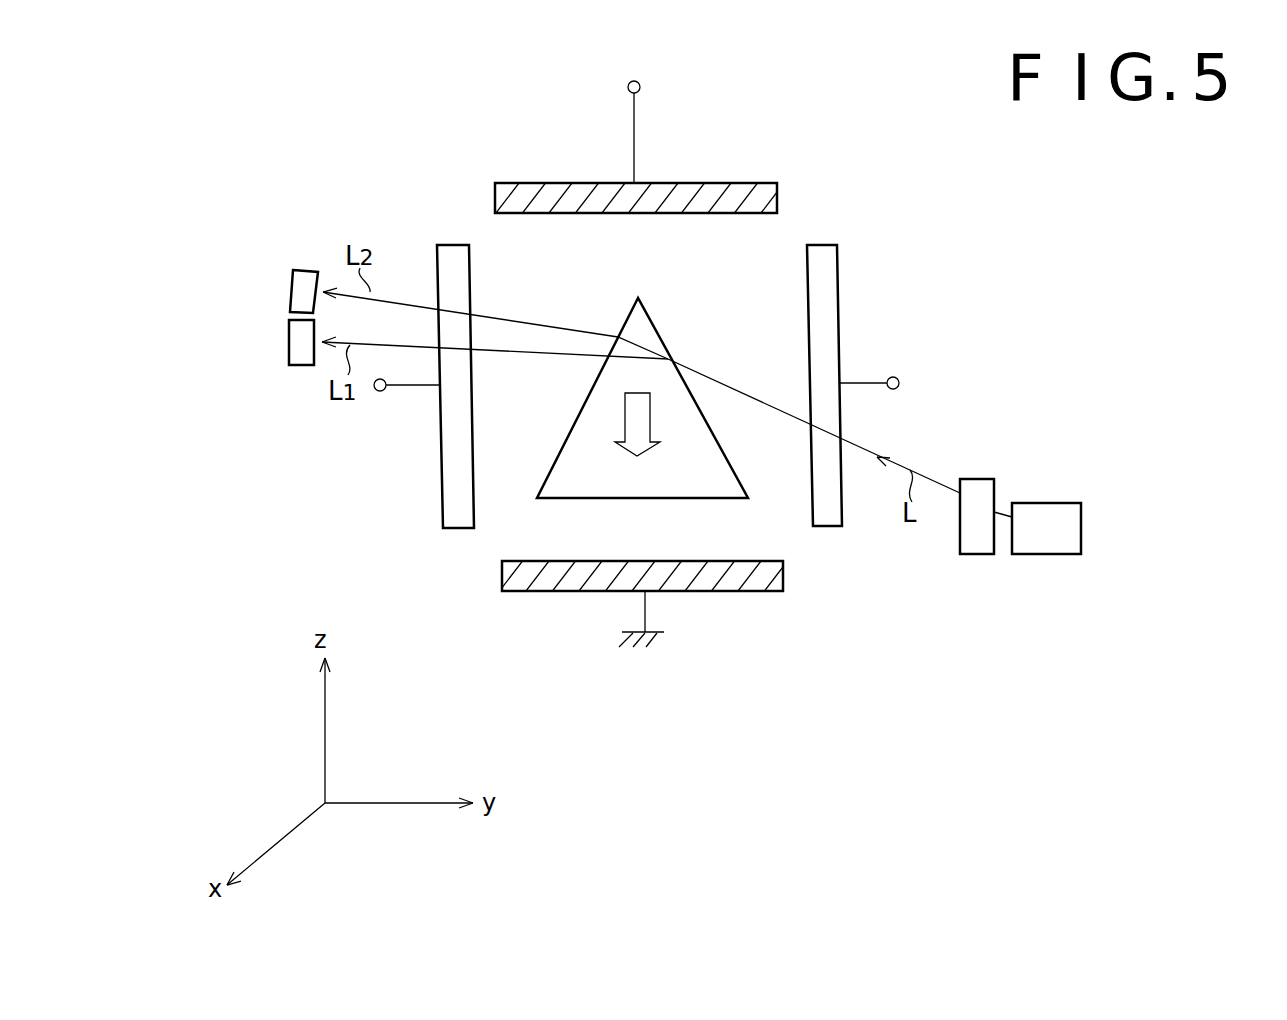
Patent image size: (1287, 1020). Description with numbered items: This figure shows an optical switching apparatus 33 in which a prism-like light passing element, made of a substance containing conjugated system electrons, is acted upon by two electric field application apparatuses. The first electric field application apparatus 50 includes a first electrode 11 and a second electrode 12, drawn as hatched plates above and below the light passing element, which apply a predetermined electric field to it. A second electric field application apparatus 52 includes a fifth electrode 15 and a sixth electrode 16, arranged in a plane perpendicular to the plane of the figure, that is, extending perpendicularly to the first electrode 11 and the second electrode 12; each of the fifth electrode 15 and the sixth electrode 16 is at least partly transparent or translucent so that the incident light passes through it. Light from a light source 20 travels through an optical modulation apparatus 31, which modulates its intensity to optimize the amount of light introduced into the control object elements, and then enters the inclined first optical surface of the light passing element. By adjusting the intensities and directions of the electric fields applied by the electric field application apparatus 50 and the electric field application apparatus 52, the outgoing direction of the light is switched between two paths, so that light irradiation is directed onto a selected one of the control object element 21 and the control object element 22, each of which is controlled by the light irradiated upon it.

The first electrode 11 is at (757, 182).
The second electrode 12 is at (765, 591).
The fifth electrode 15 is at (807, 283).
The sixth electrode 16 is at (469, 285).
The light source 20 is at (1048, 503).
The control object element 21 is at (288, 350).
The control object element 22 is at (290, 291).
The optical modulation apparatus 31 is at (978, 479).
The optical switching apparatus 33 is at (945, 741).
The electric field application apparatus 50 is at (1195, 322).
The electric field application apparatus 52 is at (697, 278).